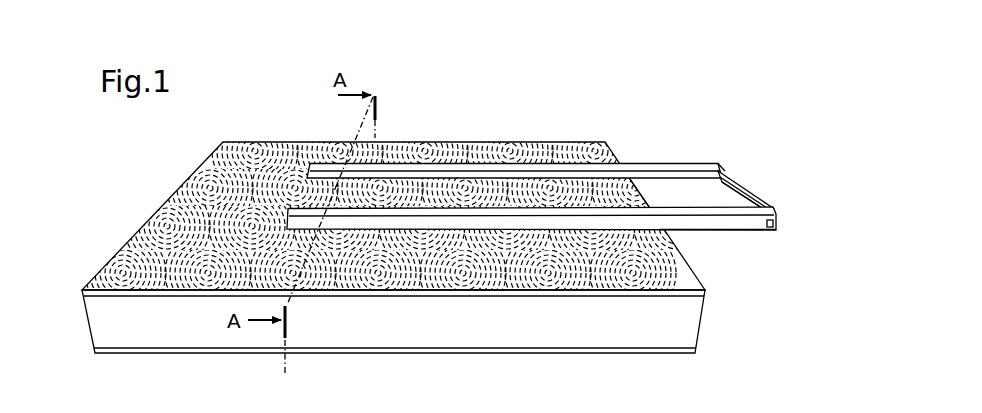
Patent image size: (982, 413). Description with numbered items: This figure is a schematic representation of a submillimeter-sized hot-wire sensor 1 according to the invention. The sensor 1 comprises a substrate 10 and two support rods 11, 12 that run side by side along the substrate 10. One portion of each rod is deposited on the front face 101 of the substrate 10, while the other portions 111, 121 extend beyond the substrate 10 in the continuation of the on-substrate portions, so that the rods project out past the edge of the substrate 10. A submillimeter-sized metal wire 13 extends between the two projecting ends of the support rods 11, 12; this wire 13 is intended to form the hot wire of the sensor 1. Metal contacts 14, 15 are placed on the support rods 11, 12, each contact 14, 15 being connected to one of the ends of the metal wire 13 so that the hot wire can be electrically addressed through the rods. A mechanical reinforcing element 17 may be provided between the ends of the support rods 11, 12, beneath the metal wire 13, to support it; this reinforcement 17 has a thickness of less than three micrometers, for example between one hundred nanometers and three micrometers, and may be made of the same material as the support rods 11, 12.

The hot-wire sensor 1 is at (132, 199).
The substrate 10 is at (681, 320).
The front face 101 is at (252, 148).
The support rod 11 is at (698, 233).
The portion of support rod extending beyond substrate 111 is at (740, 240).
The support rod 12 is at (649, 188).
The portion of support rod extending beyond substrate 121 is at (689, 187).
The metal wire 13 is at (753, 187).
The metal contact 14 is at (457, 229).
The metal contact 15 is at (487, 175).
The mechanical reinforcing element 17 is at (722, 194).